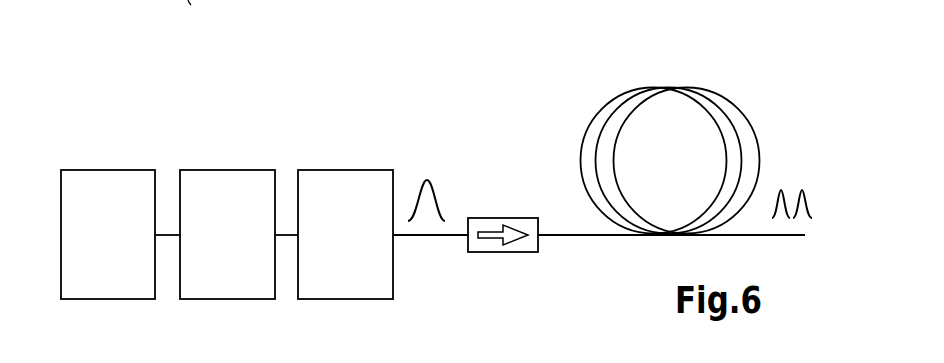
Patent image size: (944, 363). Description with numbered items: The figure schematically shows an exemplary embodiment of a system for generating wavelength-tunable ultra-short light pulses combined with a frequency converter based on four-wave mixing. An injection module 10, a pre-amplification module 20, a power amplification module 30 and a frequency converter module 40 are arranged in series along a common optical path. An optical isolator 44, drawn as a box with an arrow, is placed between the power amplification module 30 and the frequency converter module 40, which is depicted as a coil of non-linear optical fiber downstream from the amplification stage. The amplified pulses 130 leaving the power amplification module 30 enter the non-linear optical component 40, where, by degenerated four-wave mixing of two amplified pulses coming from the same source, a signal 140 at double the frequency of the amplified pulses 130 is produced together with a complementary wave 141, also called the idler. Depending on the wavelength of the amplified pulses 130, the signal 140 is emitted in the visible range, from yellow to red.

The injection module 10 is at (94, 246).
The pre-amplification module 20 is at (242, 246).
The power amplification module 30 is at (360, 246).
The frequency converter module 40 is at (717, 90).
The optical isolator 44 is at (518, 252).
The amplified pulses 130 is at (436, 192).
The signal 140 is at (806, 197).
The complementary wave 141 is at (790, 196).